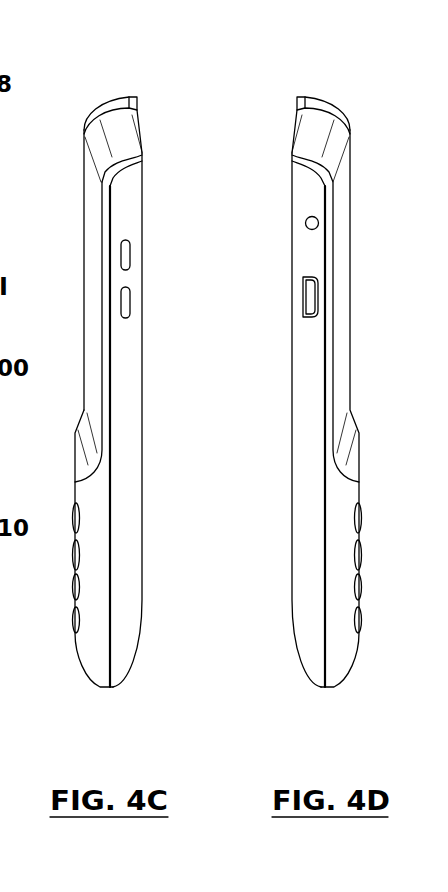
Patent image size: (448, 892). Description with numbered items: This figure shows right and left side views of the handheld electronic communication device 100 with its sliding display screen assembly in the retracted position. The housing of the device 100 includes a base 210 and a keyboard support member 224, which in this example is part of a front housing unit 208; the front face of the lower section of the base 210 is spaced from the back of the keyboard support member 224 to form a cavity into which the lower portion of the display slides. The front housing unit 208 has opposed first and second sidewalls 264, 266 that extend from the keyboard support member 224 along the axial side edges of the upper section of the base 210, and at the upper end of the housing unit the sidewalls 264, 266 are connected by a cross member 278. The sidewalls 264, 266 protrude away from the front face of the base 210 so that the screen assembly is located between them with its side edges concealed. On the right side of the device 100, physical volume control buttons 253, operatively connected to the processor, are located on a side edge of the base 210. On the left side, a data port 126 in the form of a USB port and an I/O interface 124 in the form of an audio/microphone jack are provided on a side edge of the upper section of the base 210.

In FIG. 4C, the handheld electronic communication device 100 is at (125, 75).
In FIG. 4D, the handheld electronic communication device 100 is at (330, 80).
In FIG. 4C, the cross member 278 is at (145, 129).
In FIG. 4C, the second sidewall 266 is at (88, 277).
In FIG. 4C, the volume control buttons 253 is at (128, 300).
In FIG. 4C, the base 210 is at (142, 537).
In FIG. 4D, the base 210 is at (292, 555).
In FIG. 4C, the keyboard support member 224 is at (72, 537).
In FIG. 4D, the keyboard support member 224 is at (362, 567).
In FIG. 4C, the front housing unit 208 is at (97, 642).
In FIG. 4D, the auxiliary I/O interface 124 is at (305, 223).
In FIG. 4D, the data port 126 is at (303, 298).
In FIG. 4D, the first sidewall 264 is at (328, 303).